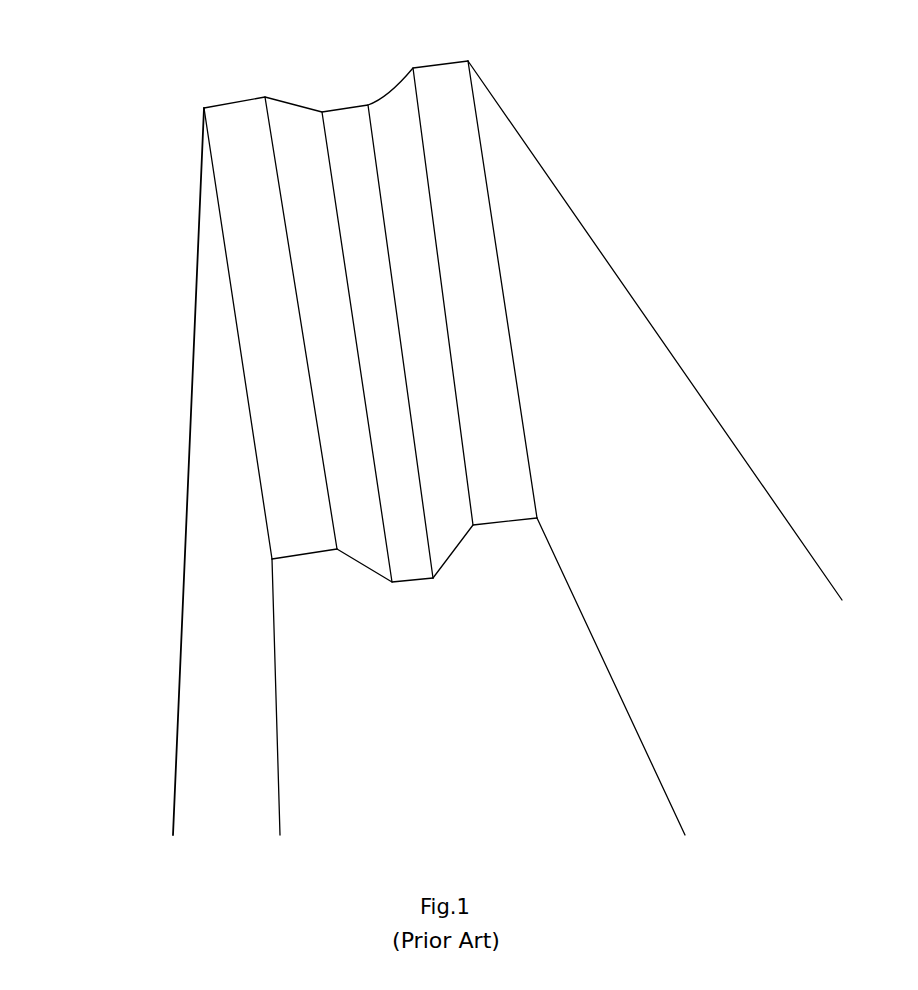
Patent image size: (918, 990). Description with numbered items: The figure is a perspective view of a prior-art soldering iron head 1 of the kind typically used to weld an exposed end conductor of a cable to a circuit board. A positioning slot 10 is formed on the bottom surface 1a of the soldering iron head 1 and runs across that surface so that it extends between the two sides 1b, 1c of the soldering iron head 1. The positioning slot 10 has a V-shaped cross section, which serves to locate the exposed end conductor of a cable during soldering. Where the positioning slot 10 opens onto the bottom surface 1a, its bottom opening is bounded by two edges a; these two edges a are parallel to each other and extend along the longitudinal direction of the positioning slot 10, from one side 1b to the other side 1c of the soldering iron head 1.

The soldering iron head 1 is at (212, 702).
The bottom surface 1a is at (280, 362).
The side 1b is at (550, 668).
The side 1c is at (233, 100).
The positioning slot 10 is at (348, 452).
The edge a is at (290, 245).